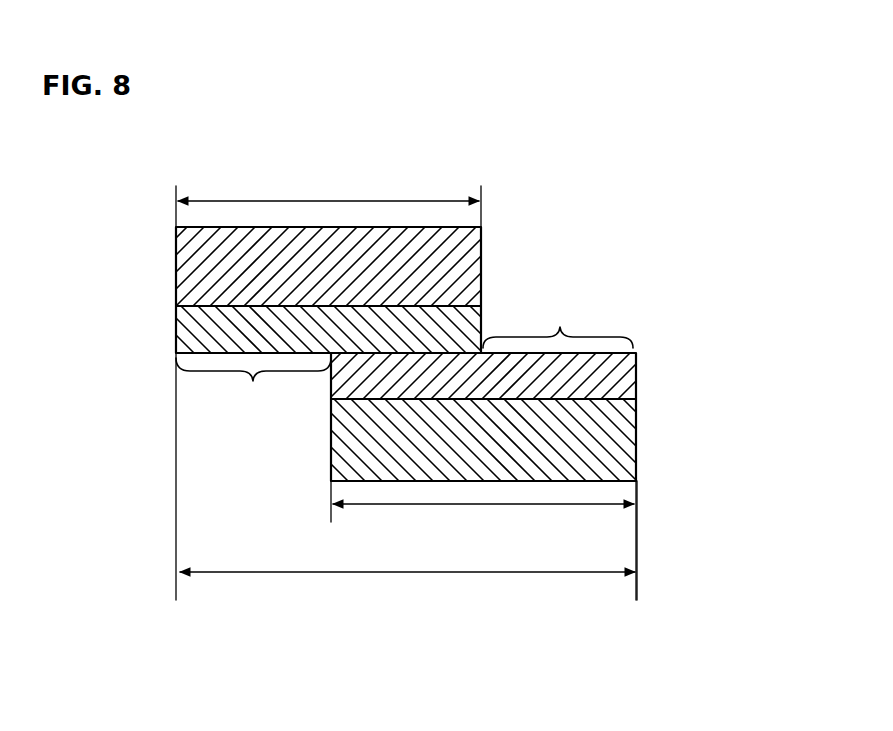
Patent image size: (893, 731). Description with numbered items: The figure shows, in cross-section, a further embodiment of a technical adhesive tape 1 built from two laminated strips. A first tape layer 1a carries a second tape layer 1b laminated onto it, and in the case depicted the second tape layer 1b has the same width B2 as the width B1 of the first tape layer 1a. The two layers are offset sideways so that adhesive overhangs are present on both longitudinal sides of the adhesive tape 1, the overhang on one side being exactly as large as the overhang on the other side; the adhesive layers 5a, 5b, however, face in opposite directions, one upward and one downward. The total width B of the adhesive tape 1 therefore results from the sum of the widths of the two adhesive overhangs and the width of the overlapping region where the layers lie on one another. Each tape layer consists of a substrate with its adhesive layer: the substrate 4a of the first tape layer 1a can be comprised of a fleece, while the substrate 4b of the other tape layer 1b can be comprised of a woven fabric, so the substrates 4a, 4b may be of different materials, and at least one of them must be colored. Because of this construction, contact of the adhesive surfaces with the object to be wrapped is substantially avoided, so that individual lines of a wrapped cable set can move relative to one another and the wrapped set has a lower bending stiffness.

The technical adhesive tape 1 is at (482, 155).
The first tape layer 1a is at (502, 417).
The second tape layer 1b is at (303, 291).
The substrate of the first tape layer 4a is at (344, 440).
The substrate of the second tape layer 4b is at (474, 270).
The adhesive layer of the first tape layer 5a is at (342, 376).
The adhesive layer of the second tape layer 5b is at (474, 327).
The total width B is at (407, 573).
The width of the first tape layer B1 is at (483, 505).
The width of the second tape layer B2 is at (318, 201).